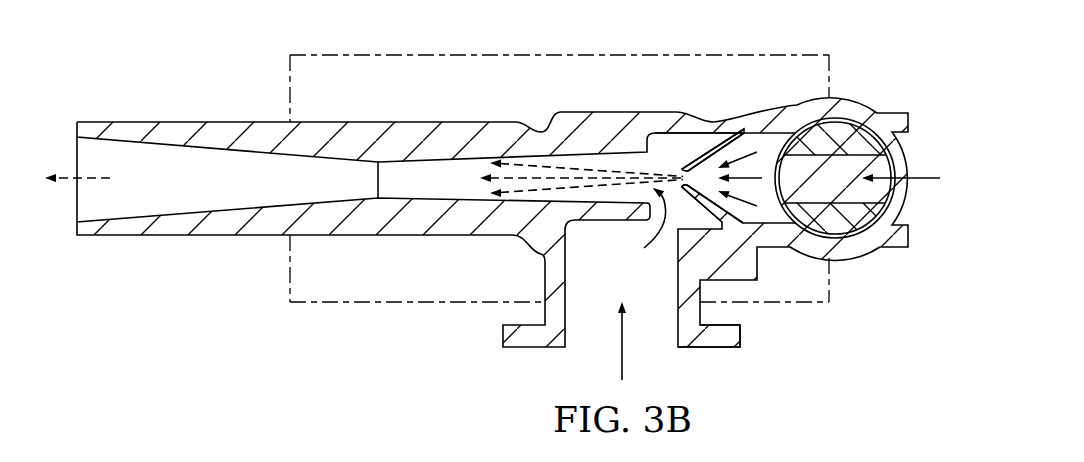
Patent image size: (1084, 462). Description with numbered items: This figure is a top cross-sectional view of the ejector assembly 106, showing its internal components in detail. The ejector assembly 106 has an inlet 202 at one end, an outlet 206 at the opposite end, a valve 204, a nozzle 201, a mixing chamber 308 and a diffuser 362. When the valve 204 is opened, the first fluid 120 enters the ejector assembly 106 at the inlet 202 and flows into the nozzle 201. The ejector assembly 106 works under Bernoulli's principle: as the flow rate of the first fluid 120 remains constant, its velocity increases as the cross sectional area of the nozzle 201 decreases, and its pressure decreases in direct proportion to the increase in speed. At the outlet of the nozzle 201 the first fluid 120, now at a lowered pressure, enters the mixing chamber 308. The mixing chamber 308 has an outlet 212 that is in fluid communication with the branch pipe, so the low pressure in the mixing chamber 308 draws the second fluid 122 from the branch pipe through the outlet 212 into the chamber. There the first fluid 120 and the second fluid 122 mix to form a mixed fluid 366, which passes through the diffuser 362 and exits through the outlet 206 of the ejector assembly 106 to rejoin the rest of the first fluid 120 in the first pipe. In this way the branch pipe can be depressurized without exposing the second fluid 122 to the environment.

The ejector assembly 106 is at (427, 312).
The first fluid 120 is at (656, 177).
The second fluid 122 is at (620, 363).
The nozzle 201 is at (757, 137).
The inlet 202 is at (922, 118).
The valve 204 is at (836, 228).
The outlet 206 is at (176, 122).
The outlet 212 is at (718, 349).
The mixing chamber 308 is at (683, 150).
The diffuser 362 is at (422, 172).
The mixed fluid 366 is at (110, 178).